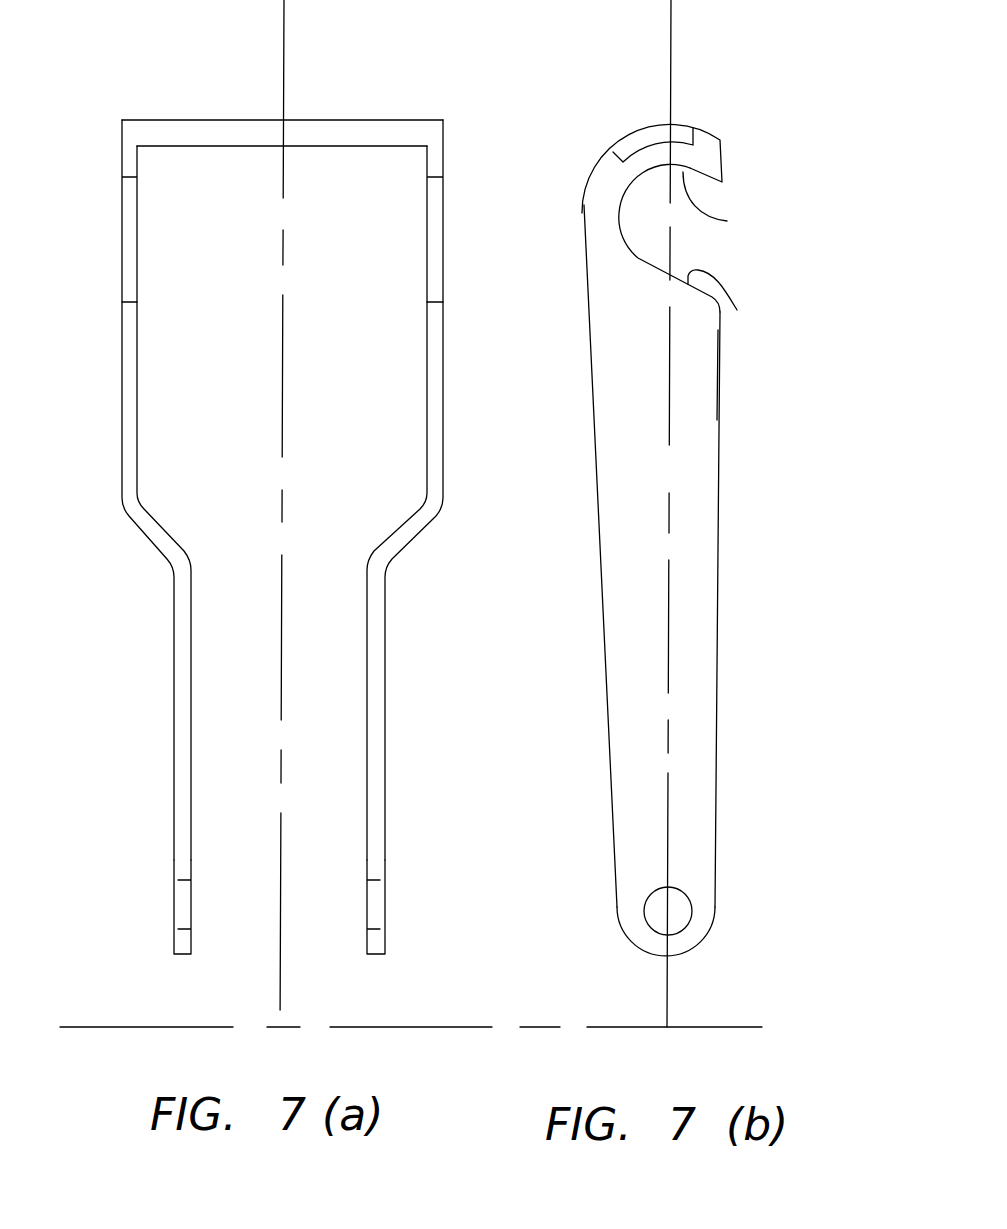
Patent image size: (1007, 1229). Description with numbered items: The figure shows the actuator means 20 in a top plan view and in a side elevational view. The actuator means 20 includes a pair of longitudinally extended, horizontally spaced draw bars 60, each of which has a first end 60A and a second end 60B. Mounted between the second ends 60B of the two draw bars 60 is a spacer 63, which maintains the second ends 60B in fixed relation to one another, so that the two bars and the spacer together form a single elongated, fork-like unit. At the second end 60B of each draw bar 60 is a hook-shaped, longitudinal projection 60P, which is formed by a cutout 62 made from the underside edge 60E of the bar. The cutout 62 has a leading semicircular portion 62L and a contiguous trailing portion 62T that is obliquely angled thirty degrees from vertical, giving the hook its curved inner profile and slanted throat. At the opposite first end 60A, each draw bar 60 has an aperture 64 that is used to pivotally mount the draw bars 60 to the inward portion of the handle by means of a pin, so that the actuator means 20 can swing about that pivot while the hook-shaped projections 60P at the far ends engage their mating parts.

In FIG. 7A, the actuator means 20 is at (115, 571).
In FIG. 7B, the actuator means 20 is at (740, 590).
In FIG. 7A, the draw bar 60 is at (120, 440).
In FIG. 7A, the first end 60A is at (178, 866).
In FIG. 7B, the first end 60A is at (705, 893).
In FIG. 7A, the second end 60B is at (134, 147).
In FIG. 7B, the second end 60B is at (613, 378).
In FIG. 7B, the underside edge 60E is at (713, 358).
In FIG. 7B, the longitudinal projection 60P is at (616, 168).
In FIG. 7B, the cutout 62 is at (680, 232).
In FIG. 7B, the leading semicircular portion 62L is at (727, 221).
In FIG. 7B, the trailing portion 62T is at (737, 310).
In FIG. 7A, the spacer 63 is at (257, 133).
In FIG. 7B, the aperture 64 is at (662, 908).